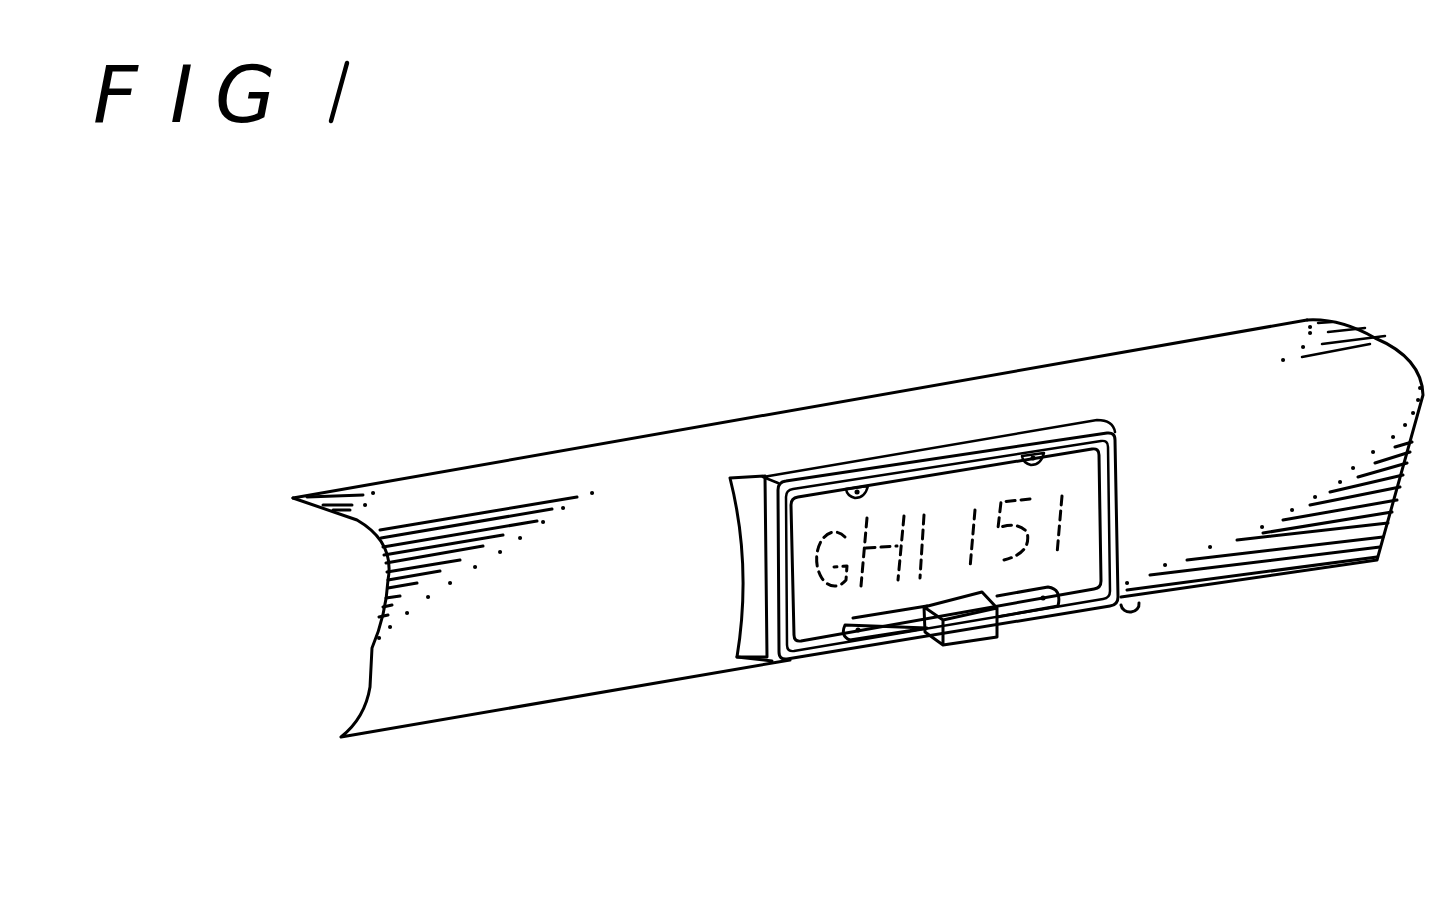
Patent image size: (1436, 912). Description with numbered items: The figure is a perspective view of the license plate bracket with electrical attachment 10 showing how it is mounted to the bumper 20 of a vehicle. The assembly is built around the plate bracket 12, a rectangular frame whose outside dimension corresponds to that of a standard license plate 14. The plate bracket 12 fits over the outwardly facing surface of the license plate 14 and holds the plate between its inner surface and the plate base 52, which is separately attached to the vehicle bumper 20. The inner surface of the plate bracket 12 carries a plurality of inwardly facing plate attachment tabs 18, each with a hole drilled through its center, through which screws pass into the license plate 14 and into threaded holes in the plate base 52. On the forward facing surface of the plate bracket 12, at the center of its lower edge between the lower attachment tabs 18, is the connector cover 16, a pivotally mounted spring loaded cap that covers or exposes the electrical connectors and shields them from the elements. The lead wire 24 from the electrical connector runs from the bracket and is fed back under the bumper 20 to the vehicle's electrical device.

The license plate bracket with electrical attachment 10 is at (667, 398).
The plate bracket 12 is at (815, 485).
The license plate 14 is at (942, 505).
The connector cover 16 is at (966, 627).
The plate attachment tabs 18 is at (855, 642).
The bumper 20 is at (578, 620).
The lead wire 24 is at (1130, 612).
The plate base 52 is at (757, 570).